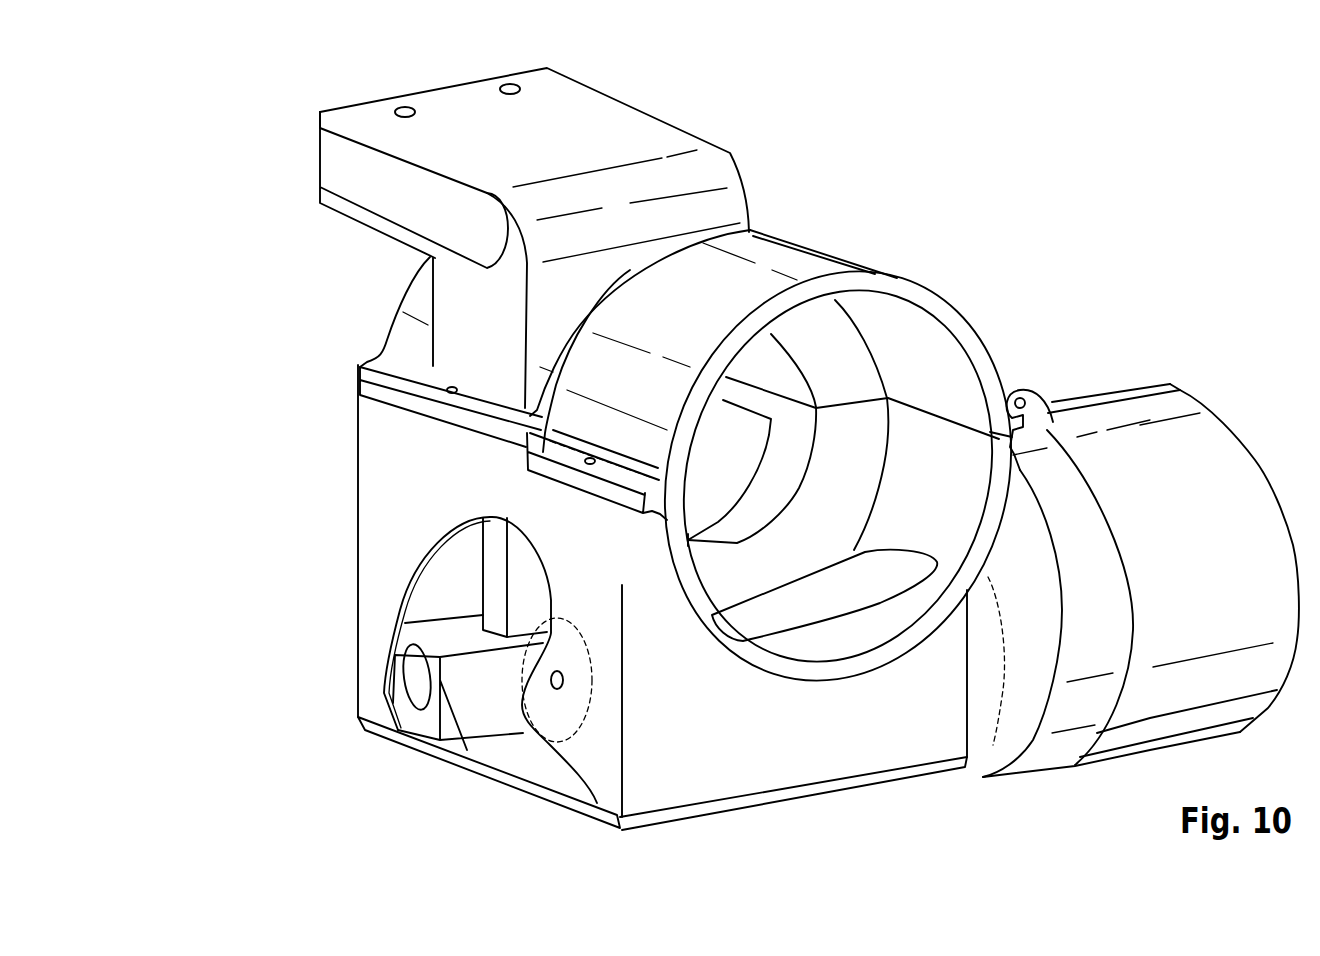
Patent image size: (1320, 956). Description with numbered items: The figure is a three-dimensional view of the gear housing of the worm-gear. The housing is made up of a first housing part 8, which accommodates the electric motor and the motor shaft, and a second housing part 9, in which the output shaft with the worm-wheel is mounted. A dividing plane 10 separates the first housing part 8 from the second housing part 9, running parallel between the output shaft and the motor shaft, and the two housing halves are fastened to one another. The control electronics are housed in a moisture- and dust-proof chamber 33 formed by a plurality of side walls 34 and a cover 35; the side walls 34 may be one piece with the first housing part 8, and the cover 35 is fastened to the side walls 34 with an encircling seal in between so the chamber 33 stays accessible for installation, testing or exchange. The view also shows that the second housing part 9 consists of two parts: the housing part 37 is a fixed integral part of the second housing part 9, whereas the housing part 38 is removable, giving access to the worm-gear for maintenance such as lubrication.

The first housing part 8 is at (960, 517).
The second housing part 9 is at (747, 178).
The dividing plane 10 is at (360, 382).
The chamber 33 is at (493, 753).
The side walls 34 is at (393, 493).
The cover 35 is at (383, 730).
The housing part 37 is at (685, 178).
The housing part 38 is at (793, 267).